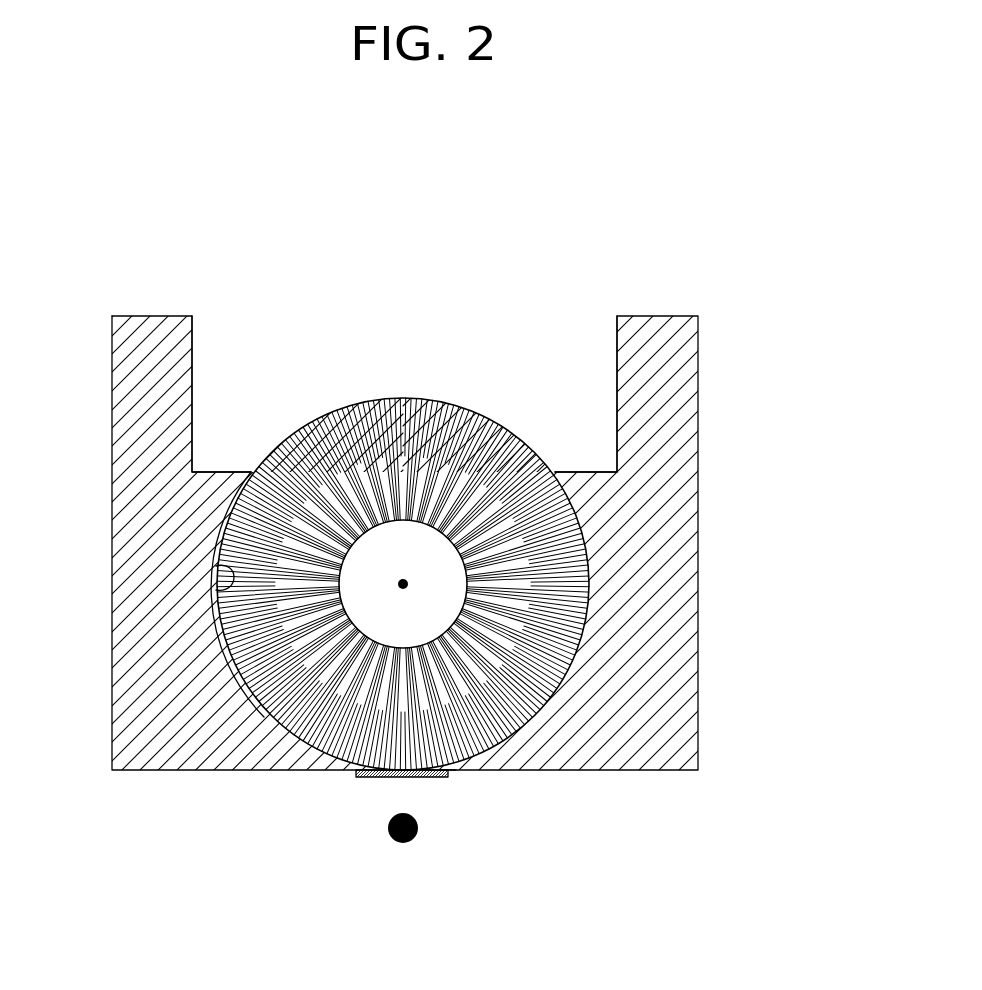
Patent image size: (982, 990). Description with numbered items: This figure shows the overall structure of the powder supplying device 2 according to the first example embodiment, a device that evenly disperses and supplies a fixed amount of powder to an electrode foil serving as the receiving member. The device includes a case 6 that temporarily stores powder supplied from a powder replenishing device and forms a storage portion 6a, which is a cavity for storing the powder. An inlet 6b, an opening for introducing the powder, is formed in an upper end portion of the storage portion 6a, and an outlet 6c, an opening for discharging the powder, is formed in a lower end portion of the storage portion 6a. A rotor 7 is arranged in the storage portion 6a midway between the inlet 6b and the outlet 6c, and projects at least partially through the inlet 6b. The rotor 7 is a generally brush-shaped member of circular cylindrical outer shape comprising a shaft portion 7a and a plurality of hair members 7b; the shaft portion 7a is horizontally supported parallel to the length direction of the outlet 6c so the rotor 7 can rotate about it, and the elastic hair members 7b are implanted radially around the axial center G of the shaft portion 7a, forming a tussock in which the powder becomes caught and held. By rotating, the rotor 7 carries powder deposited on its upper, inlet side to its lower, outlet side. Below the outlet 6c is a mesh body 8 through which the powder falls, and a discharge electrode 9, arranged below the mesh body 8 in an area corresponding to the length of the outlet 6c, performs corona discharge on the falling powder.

The powder supplying device 2 is at (569, 215).
The case 6 is at (718, 305).
The storage portion 6a is at (215, 578).
The inlet 6b is at (193, 358).
The outlet 6c is at (383, 776).
The rotor 7 is at (493, 506).
The shaft portion 7a is at (565, 601).
The hair members 7b is at (470, 404).
The mesh body 8 is at (448, 774).
The discharge electrode 9 is at (418, 828).
The axial center G is at (405, 583).